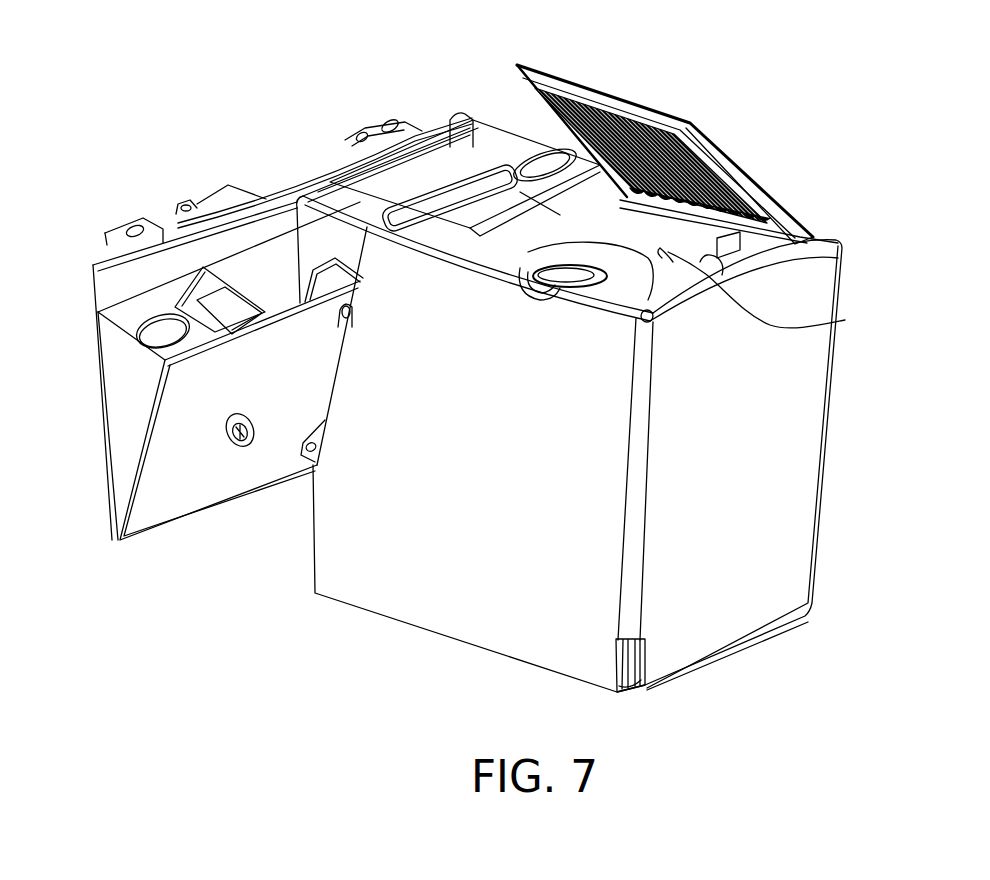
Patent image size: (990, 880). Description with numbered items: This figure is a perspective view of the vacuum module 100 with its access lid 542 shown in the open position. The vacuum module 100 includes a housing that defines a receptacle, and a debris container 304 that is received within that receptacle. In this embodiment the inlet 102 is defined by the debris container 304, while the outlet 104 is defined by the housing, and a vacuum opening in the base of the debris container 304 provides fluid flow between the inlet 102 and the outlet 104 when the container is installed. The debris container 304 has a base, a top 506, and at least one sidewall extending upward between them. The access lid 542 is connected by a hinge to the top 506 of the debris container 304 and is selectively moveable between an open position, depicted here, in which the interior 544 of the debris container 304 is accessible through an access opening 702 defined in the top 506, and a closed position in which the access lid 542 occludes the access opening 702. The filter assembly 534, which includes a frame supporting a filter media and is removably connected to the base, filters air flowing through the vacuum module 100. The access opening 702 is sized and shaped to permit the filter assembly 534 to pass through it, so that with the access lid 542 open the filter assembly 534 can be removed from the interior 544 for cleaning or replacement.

The vacuum module 100 is at (235, 115).
The outlet 104 is at (372, 163).
The inlet 102 is at (548, 135).
The debris container 304 is at (808, 205).
The filter assembly 534 is at (590, 248).
The access lid 542 is at (660, 108).
The top 506 is at (810, 232).
The interior 544 is at (717, 268).
The access opening 702 is at (822, 321).